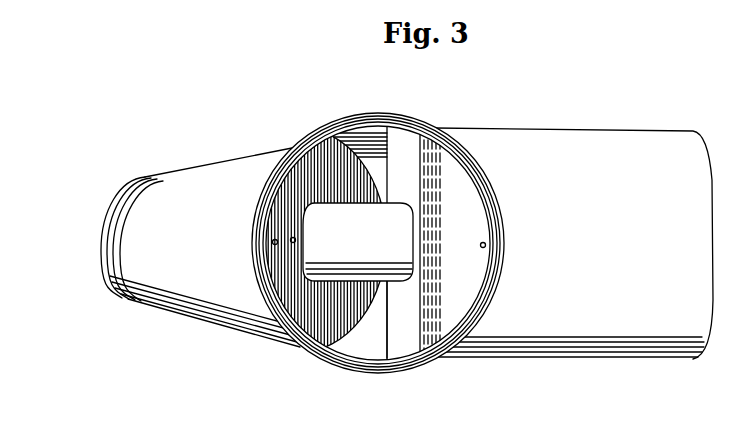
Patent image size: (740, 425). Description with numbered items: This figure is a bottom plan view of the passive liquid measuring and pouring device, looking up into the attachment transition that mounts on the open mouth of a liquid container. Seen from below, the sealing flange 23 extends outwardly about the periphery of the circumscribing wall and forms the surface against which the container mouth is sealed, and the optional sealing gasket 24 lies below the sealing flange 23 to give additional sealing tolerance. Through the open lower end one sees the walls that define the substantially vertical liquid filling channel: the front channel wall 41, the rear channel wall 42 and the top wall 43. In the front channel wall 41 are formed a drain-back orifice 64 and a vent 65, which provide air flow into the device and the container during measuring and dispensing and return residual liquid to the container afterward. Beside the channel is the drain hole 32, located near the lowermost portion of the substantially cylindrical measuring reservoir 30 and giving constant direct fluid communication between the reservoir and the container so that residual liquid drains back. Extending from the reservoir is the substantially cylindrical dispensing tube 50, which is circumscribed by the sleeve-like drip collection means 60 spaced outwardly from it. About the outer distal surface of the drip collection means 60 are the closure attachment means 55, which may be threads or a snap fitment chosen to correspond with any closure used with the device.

The sealing flange 23 is at (366, 111).
The sealing gasket 24 is at (395, 121).
The measuring reservoir 30 is at (618, 130).
The drain hole 32 is at (486, 244).
The front channel wall 41 is at (318, 162).
The rear channel wall 42 is at (404, 146).
The top wall 43 is at (368, 342).
The dispensing tube 50 is at (352, 252).
The closure attachment means 55 is at (139, 176).
The drip collection means 60 is at (178, 274).
The drain-back orifice 64 is at (272, 244).
The vent 65 is at (290, 239).